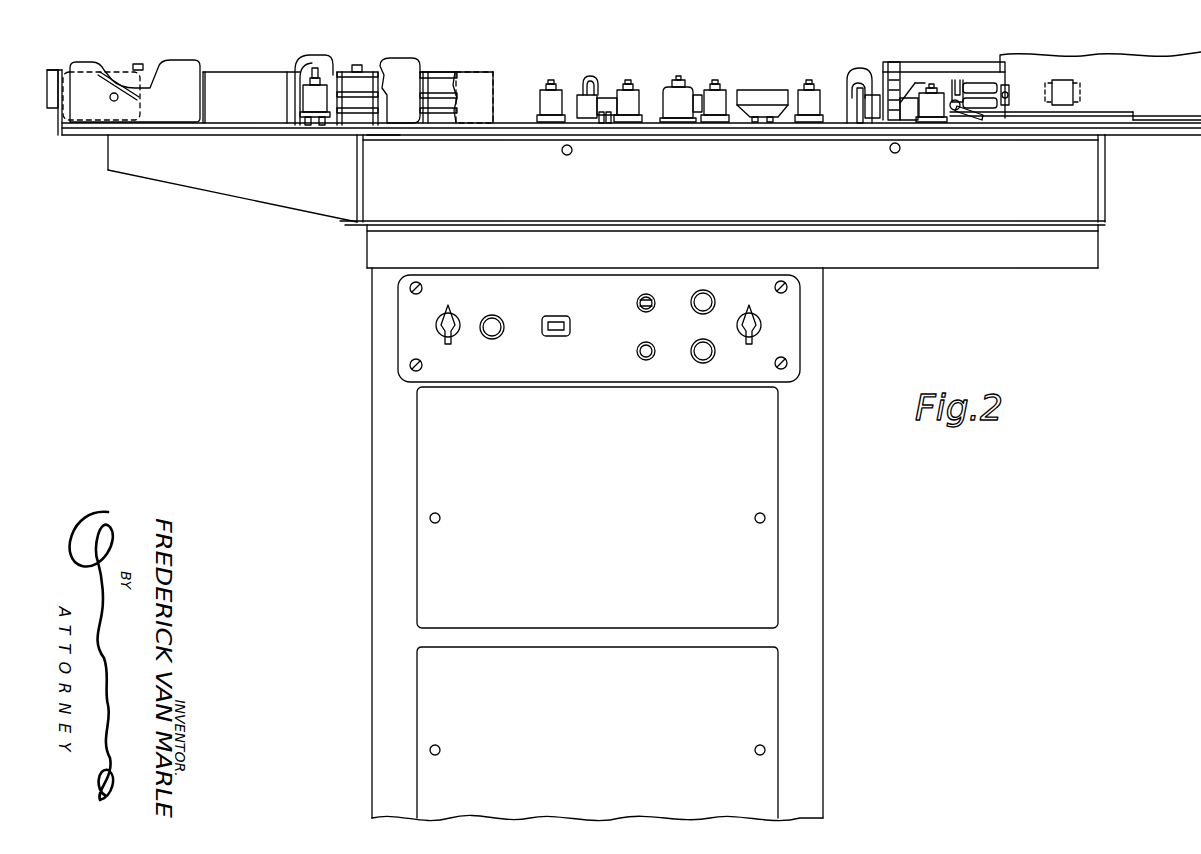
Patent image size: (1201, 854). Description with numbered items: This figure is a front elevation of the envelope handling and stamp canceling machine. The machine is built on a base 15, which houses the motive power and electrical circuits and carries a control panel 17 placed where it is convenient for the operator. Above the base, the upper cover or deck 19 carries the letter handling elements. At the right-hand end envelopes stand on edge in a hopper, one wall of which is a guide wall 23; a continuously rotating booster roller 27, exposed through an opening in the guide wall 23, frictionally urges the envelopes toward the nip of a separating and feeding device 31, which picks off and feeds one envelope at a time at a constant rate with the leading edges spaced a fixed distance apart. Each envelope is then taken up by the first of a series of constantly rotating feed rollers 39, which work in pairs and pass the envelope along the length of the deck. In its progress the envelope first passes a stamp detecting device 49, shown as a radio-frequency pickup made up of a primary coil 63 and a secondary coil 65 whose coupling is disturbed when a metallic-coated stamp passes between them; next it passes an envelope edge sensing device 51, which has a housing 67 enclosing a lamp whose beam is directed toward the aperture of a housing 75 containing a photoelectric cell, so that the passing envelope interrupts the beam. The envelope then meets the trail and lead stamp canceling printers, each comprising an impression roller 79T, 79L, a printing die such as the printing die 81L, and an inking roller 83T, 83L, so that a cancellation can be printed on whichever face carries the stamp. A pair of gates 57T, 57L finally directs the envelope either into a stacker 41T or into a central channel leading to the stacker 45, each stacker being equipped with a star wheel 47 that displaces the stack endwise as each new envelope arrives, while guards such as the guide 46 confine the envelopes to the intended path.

The base 15 is at (808, 618).
The control panel 17 is at (781, 325).
The upper cover (deck) 19 is at (507, 128).
The guide wall 23 is at (1165, 95).
The booster roller 27 is at (1080, 90).
The separating and feeding device 31 is at (960, 71).
The feed rollers 39 is at (303, 95).
The stacker 41T is at (383, 135).
The stacker 45 is at (207, 92).
The guard (guide) 46 is at (180, 108).
The star wheel 47 is at (350, 115).
The stamp detecting device 49 is at (912, 141).
The envelope edge sensing device 51 is at (858, 134).
The gate 57T is at (440, 73).
The gate 57L is at (490, 65).
The primary coil 63 is at (908, 110).
The secondary coil 65 is at (910, 70).
The housing 67 is at (860, 97).
The housing 75 is at (858, 70).
The impression roller 79L is at (585, 87).
The impression roller 79T is at (668, 107).
The printing die 81L is at (580, 108).
The inking roller 83L is at (593, 112).
The inking roller 83T is at (698, 93).